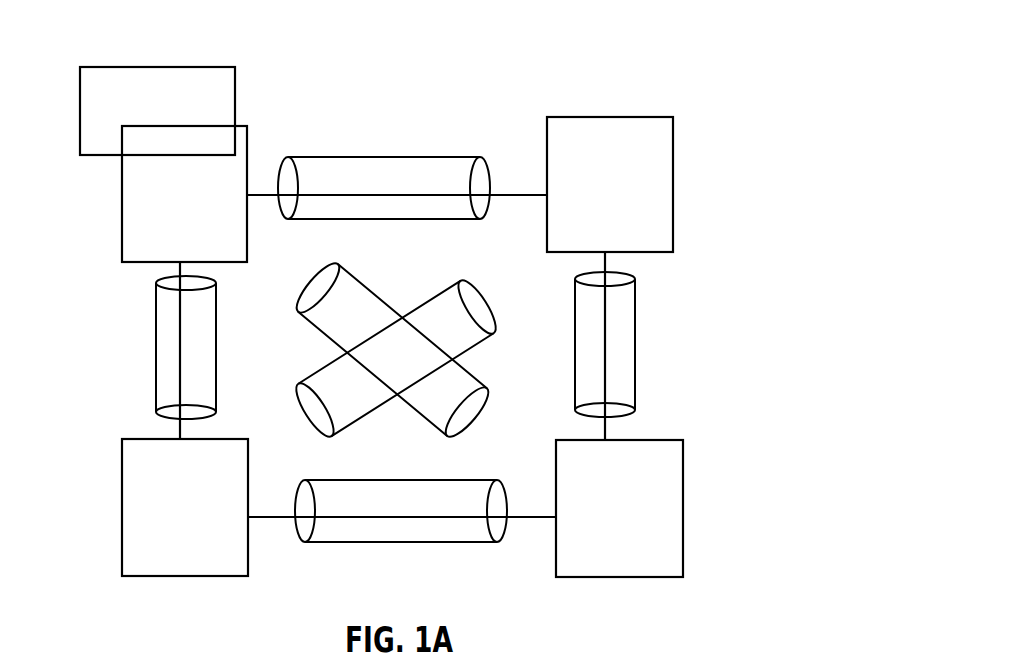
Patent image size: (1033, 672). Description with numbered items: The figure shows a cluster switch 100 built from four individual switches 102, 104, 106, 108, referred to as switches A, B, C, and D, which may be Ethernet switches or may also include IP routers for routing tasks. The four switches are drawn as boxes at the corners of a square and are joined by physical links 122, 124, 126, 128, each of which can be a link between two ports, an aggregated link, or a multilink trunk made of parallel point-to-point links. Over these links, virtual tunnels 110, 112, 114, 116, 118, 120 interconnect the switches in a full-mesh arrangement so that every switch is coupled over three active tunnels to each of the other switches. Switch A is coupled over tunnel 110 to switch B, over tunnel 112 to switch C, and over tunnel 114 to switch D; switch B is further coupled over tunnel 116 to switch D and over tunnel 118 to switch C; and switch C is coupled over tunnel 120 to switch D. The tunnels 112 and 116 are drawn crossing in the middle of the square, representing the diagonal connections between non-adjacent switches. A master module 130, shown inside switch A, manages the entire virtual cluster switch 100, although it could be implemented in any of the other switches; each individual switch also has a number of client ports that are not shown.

The cluster switch 100 is at (663, 67).
The individual switch 102 is at (247, 145).
The individual switch 104 is at (673, 180).
The individual switch 106 is at (653, 440).
The individual switch 108 is at (200, 576).
The virtual tunnel 110 is at (382, 157).
The virtual tunnel 112 is at (348, 273).
The virtual tunnel 114 is at (156, 345).
The virtual tunnel 116 is at (445, 288).
The virtual tunnel 118 is at (635, 345).
The virtual tunnel 120 is at (387, 480).
The physical link 122 is at (508, 195).
The physical link 124 is at (607, 263).
The physical link 126 is at (525, 517).
The physical link 128 is at (177, 435).
The master module 130 is at (235, 67).